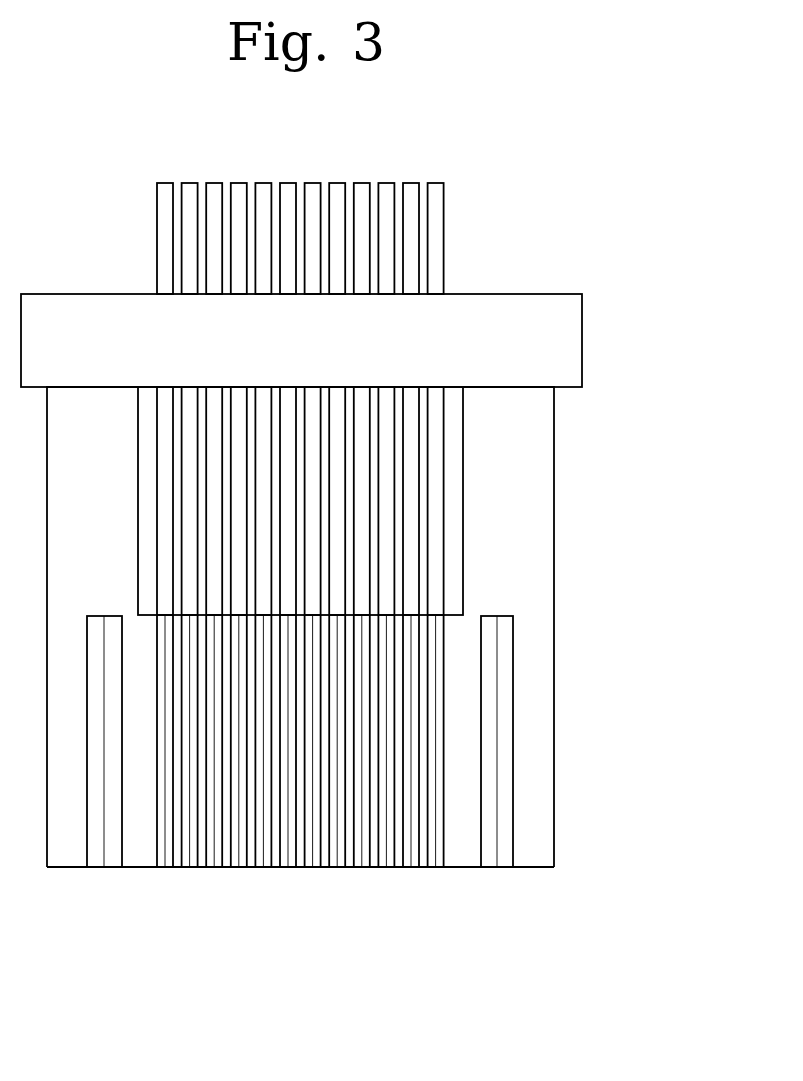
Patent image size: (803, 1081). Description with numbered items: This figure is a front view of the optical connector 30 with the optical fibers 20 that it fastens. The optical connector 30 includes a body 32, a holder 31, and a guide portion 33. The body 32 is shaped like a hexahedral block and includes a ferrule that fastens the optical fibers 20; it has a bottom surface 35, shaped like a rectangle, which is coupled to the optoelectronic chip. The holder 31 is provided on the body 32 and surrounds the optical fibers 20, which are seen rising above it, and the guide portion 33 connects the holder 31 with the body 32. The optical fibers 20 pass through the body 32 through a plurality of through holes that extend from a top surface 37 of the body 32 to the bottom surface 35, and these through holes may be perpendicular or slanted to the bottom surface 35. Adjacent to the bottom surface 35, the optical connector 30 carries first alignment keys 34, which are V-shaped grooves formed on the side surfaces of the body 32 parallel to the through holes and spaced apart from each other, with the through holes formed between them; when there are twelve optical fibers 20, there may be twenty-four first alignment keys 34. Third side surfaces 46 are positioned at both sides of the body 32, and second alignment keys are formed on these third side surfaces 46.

The optical fibers 20 is at (433, 218).
The optical connector 30 is at (377, 599).
The holder 31 is at (560, 343).
The body 32 is at (542, 683).
The guide portion 33 is at (542, 514).
The first alignment keys 34 is at (420, 741).
The bottom surface 35 is at (460, 867).
The top surface 37 is at (452, 615).
The third side surfaces 46 is at (555, 628).